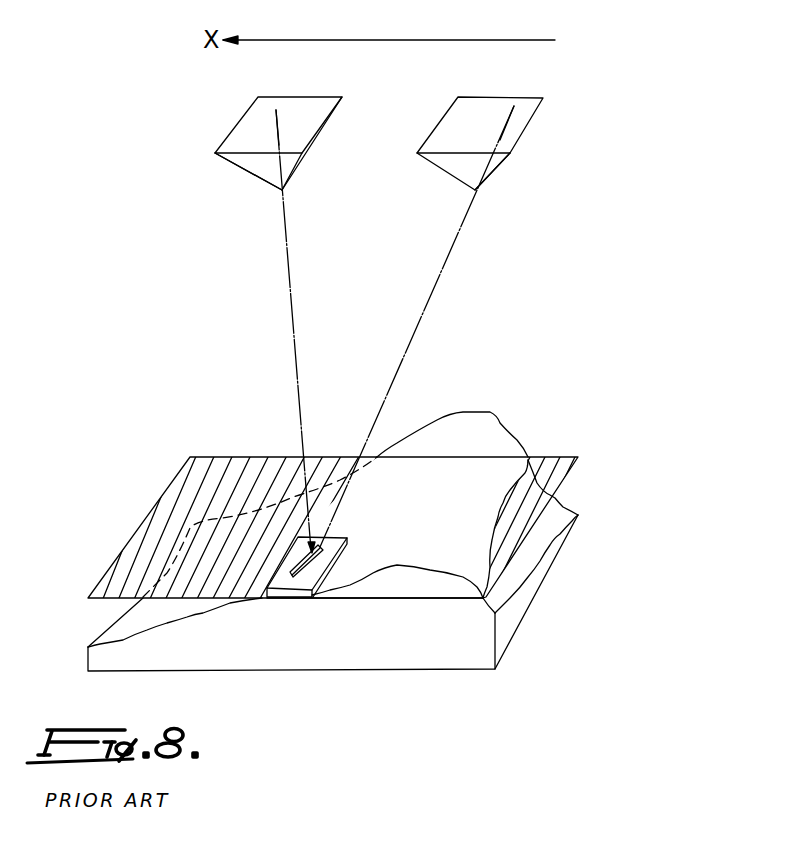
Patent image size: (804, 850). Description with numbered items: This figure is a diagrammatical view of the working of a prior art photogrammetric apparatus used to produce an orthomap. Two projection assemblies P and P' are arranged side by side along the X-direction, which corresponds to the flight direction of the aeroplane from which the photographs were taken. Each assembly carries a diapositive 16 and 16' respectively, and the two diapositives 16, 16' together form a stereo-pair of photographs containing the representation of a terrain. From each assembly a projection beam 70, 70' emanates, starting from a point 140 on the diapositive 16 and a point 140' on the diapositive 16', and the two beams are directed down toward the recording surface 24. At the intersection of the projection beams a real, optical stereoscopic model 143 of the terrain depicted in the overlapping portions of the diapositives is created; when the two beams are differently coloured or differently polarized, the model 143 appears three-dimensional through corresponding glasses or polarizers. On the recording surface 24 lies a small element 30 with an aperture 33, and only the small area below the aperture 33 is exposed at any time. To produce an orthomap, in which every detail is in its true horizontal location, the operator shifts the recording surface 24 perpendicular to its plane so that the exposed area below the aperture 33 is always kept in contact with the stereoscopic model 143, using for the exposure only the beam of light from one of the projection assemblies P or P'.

The diapositive 16 is at (496, 143).
The diapositive 16' is at (266, 143).
The light beam entry point on prism 140 is at (533, 100).
The light beam entry point on prism (second position) 140' is at (296, 102).
The light beam 70 is at (417, 326).
The light beam (second position) 70' is at (313, 331).
The recording surface 24 is at (202, 465).
The stereoscopic model 143 is at (493, 430).
The detector plate 30 is at (309, 580).
The aperture 33 is at (298, 573).
The projection assembly P is at (520, 186).
The projection assembly P' is at (229, 195).